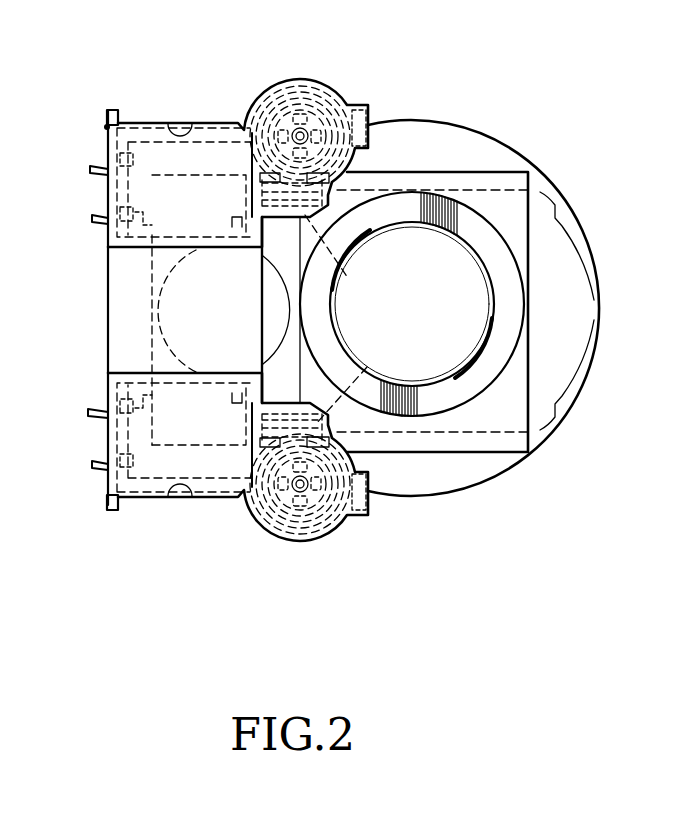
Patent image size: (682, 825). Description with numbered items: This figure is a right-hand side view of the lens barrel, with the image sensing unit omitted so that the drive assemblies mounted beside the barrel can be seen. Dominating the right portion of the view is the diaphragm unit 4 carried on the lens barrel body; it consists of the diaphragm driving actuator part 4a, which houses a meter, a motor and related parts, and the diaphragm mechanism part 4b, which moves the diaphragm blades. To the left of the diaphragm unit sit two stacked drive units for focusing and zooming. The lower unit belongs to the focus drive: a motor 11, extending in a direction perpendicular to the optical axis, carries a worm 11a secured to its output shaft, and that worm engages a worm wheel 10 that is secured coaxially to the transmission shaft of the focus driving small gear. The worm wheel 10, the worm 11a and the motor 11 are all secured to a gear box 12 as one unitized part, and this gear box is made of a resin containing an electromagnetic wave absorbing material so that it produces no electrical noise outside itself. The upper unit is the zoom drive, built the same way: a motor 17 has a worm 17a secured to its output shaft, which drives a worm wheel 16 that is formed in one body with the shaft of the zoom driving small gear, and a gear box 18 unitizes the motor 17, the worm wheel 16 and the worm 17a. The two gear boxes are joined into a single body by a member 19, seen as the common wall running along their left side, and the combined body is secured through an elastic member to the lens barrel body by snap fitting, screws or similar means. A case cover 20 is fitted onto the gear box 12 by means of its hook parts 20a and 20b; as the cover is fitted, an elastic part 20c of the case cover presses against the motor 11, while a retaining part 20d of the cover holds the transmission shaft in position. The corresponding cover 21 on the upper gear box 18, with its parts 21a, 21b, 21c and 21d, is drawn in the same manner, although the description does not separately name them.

The diaphragm unit 4 is at (573, 260).
The diaphragm driving actuator part 4a is at (173, 312).
The diaphragm mechanism part 4b is at (495, 203).
The worm wheel 10 is at (278, 532).
The motor 11 is at (139, 500).
The worm 11a is at (370, 366).
The gear box 12 is at (108, 431).
The worm wheel 16 is at (334, 92).
The motor 17 is at (143, 131).
The worm 17a is at (344, 273).
The gear box 18 is at (108, 183).
The member 19 is at (110, 283).
The case cover 20 is at (340, 527).
The hook part 20a is at (373, 500).
The hook part 20b is at (108, 497).
The elastic part 20c is at (217, 500).
The retaining part 20d is at (305, 530).
The upper motor 21 is at (273, 83).
The upper motor flange 21a is at (373, 112).
The upper case projection 21b is at (107, 127).
The upper case recess 21c is at (190, 128).
The upper motor shaft 21d is at (303, 82).